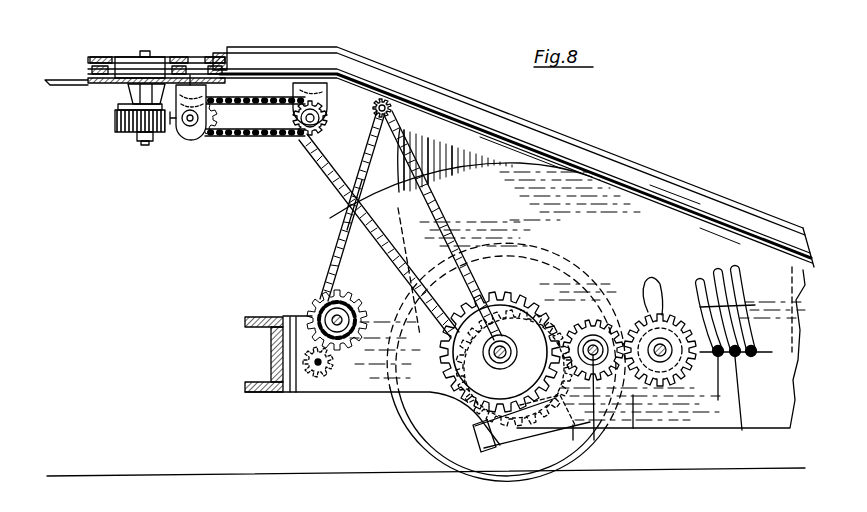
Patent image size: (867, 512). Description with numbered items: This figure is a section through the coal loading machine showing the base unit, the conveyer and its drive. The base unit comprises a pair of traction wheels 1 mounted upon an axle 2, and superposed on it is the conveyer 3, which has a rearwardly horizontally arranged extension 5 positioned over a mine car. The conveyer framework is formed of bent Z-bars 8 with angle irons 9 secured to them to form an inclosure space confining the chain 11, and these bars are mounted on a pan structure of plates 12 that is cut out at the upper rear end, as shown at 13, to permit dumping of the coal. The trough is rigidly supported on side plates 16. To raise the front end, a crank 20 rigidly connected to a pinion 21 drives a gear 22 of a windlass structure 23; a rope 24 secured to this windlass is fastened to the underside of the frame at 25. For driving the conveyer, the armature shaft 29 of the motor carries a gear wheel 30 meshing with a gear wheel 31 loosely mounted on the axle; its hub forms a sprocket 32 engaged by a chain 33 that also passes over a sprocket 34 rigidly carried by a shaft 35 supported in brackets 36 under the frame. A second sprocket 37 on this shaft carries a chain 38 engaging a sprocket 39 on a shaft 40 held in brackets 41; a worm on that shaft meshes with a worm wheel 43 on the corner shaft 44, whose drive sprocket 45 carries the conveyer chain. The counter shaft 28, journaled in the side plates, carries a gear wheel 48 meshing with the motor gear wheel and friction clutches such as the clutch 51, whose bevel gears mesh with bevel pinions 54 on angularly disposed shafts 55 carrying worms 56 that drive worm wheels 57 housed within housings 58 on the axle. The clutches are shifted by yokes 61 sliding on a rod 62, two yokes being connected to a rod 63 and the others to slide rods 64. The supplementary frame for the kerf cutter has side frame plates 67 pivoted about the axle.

The traction wheels 1 is at (412, 410).
The axle 2 is at (452, 373).
The conveyer 3 is at (533, 160).
The rearwardly horizontally arranged extension 5 is at (105, 83).
The Z-bars 8 is at (677, 190).
The angle irons 9 is at (612, 158).
The chain 11 is at (100, 58).
The plates 12 is at (713, 233).
The cut out 13 is at (58, 86).
The side plates 16 is at (413, 133).
The crank 20 is at (320, 393).
The pinion 21 is at (300, 369).
The gear 22 is at (297, 335).
The windlass structure 23 is at (323, 309).
The rope 24 is at (343, 220).
The rope attachment 25 is at (386, 104).
The counter shaft 28 is at (668, 366).
The armature shaft 29 is at (591, 408).
The gear wheel 30 is at (596, 348).
The gear wheel 31 is at (506, 298).
The sprocket 32 is at (448, 349).
The chain 33 is at (358, 178).
The sprocket 34 is at (370, 110).
The shaft 35 is at (311, 132).
The brackets 36 is at (322, 88).
The second sprocket 37 is at (286, 126).
The chain 38 is at (236, 136).
The sprocket 39 is at (193, 127).
The shaft 40 is at (180, 130).
The brackets 41 is at (195, 95).
The worm wheel 43 is at (122, 131).
The corner shaft 44 is at (145, 145).
The drive sprocket 45 is at (122, 66).
The gear wheel 48 is at (677, 317).
The friction clutch 51 is at (745, 310).
The bevel pinions 54 is at (633, 422).
The angularly disposed shafts 55 is at (573, 440).
The worms 56 is at (541, 445).
The worm wheels 57 is at (463, 406).
The housings 58 is at (483, 440).
The yokes 61 is at (713, 333).
The rod 62 is at (742, 430).
The rod 63 is at (743, 311).
The slide rods 64 is at (718, 400).
The side frame plates 67 is at (363, 262).